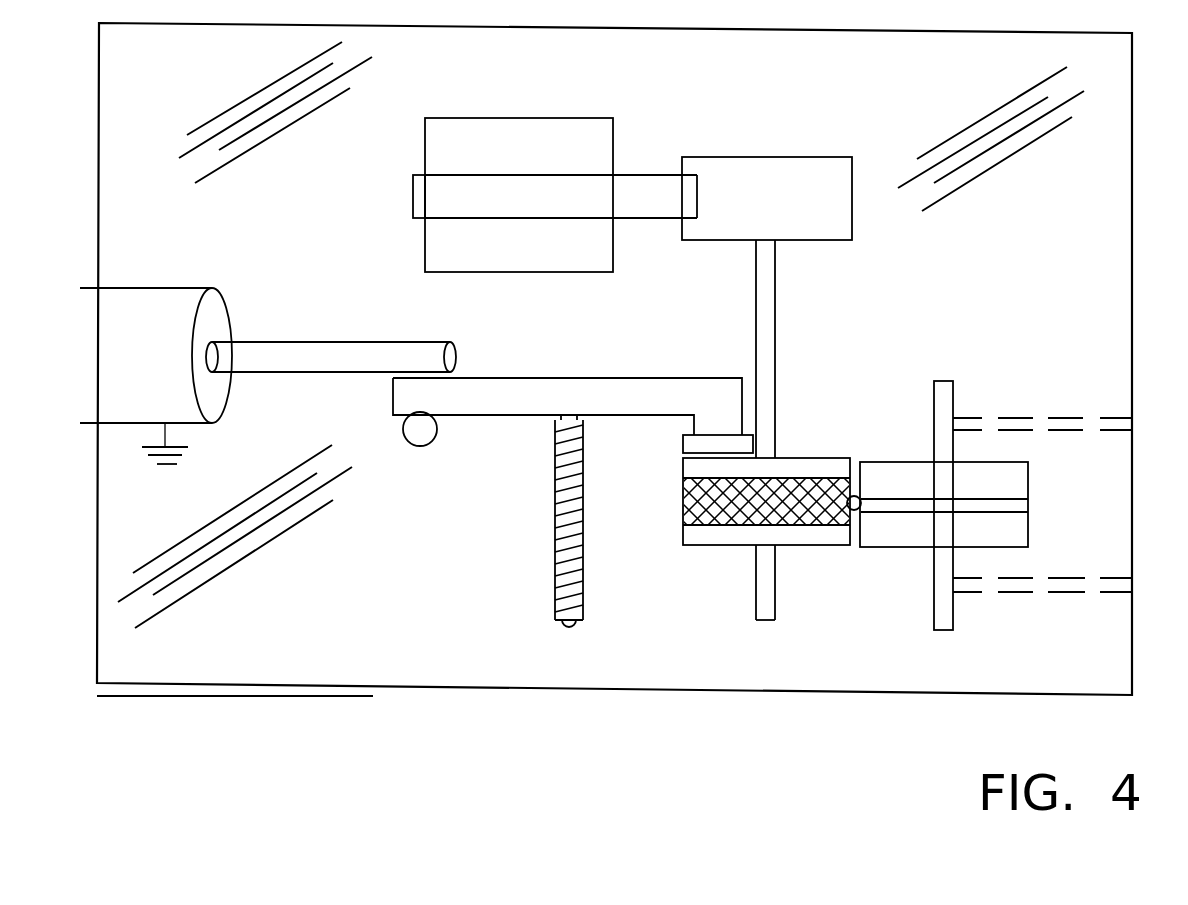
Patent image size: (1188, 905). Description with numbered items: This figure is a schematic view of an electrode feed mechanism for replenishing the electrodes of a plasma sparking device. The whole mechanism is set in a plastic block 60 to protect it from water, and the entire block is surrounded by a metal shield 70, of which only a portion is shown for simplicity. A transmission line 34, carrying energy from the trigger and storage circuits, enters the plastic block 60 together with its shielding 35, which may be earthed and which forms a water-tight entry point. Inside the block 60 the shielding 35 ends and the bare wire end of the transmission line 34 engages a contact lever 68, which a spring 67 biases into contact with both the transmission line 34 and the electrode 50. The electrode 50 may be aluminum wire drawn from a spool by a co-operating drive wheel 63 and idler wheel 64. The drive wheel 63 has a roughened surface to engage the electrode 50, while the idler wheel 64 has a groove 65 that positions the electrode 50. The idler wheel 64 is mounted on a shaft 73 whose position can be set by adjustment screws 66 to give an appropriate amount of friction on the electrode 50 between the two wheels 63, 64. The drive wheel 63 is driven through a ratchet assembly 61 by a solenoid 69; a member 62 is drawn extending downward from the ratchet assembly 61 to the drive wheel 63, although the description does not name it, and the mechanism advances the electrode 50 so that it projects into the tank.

The transmission line 34 is at (338, 350).
The shielding 35 is at (152, 302).
The electrode 50 is at (860, 543).
The plastic block 60 is at (492, 655).
The ratchet assembly 61 is at (808, 170).
The drive shaft 62 is at (775, 307).
The drive wheel 63 is at (807, 465).
The idler wheel 64 is at (898, 472).
The groove 65 is at (1028, 505).
The adjustment screws 66 is at (962, 419).
The spring 67 is at (553, 513).
The contact lever 68 is at (590, 378).
The solenoid 69 is at (572, 118).
The metal shield 70 is at (302, 696).
The shaft 73 is at (938, 597).